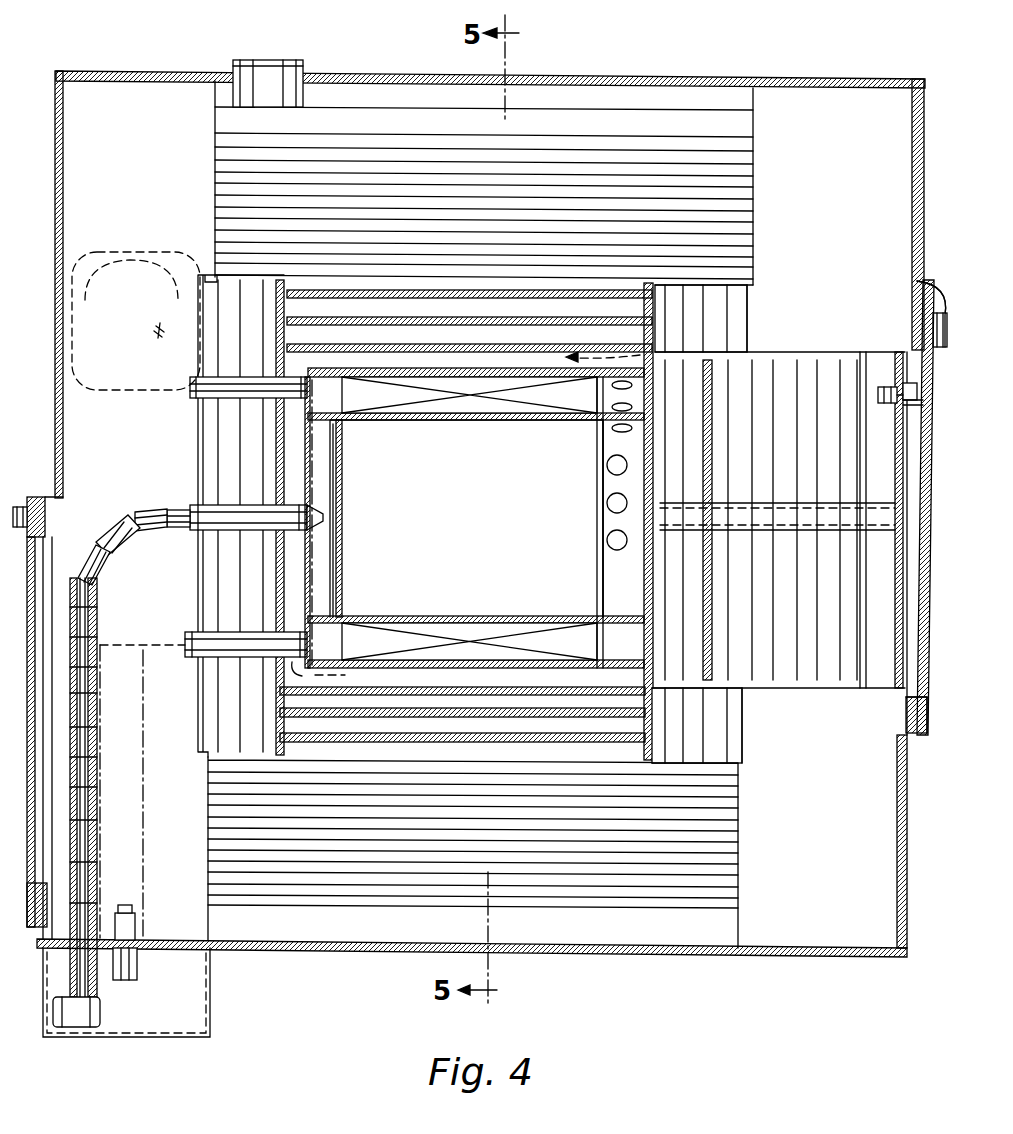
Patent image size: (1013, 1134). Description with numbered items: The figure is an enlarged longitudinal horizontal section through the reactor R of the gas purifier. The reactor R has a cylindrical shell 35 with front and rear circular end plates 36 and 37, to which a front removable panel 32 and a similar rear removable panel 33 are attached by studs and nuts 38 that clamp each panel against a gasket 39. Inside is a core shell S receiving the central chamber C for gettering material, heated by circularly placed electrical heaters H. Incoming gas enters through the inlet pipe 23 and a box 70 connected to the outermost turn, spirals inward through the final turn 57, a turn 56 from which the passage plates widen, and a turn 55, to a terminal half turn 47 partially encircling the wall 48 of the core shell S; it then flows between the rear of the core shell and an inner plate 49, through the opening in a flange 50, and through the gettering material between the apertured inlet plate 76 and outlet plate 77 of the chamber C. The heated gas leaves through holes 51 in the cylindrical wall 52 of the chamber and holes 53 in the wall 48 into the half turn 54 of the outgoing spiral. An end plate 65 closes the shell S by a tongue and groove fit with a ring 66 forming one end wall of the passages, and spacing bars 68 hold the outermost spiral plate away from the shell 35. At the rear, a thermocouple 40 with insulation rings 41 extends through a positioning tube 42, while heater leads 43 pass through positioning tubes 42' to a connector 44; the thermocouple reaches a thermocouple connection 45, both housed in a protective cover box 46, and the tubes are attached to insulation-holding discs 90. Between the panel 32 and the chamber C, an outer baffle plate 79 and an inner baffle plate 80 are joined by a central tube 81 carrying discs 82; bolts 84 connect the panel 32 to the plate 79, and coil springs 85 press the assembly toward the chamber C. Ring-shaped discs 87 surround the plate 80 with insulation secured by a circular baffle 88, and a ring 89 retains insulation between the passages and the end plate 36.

The pipe 23 is at (290, 63).
The removable panel 32 is at (922, 488).
The removable panel 33 is at (40, 615).
The cylindrical shell 35 is at (847, 79).
The front end plate 36 is at (912, 174).
The rear end plate 37 is at (63, 197).
The studs and nuts 38 is at (17, 520).
The gasket 39 is at (48, 497).
The thermocouple 40 is at (128, 517).
The insulation rings 41 is at (115, 563).
The positioning tube 42 is at (240, 503).
The positioning tubes 42' is at (203, 505).
The heater leads 43 is at (157, 303).
The connector 44 is at (136, 955).
The thermocouple connection 45 is at (92, 985).
The protective cover box 46 is at (212, 1019).
The terminal half turn 47 is at (403, 677).
The wall 48 is at (435, 378).
The inner plate 49 is at (300, 578).
The flange 50 is at (330, 455).
The holes 51 is at (605, 503).
The cylindrical wall 52 is at (392, 424).
The holes 53 is at (625, 385).
The half turn 54 is at (205, 300).
The turn 55 is at (303, 282).
The turn 56 is at (743, 275).
The final turn 57 is at (748, 148).
The end plate 65 is at (644, 566).
The ring 66 is at (644, 678).
The spacing bars 68 is at (723, 927).
The box 70 is at (404, 108).
The inlet plate 76 is at (343, 491).
The outlet plate 77 is at (600, 515).
The outer baffle plate 79 is at (890, 585).
The baffle plate 80 is at (707, 573).
The central tube 81 is at (838, 513).
The discs 82 is at (806, 667).
The bolts 84 is at (903, 393).
The coil springs 85 is at (900, 403).
The ring-shaped discs 87 is at (684, 330).
The circular baffle 88 is at (750, 333).
The ring 89 is at (857, 350).
The discs 90 is at (239, 433).
The central chamber C is at (461, 532).
The electrical heaters H is at (544, 398).
The core shell S is at (490, 383).
The reactor R is at (622, 75).